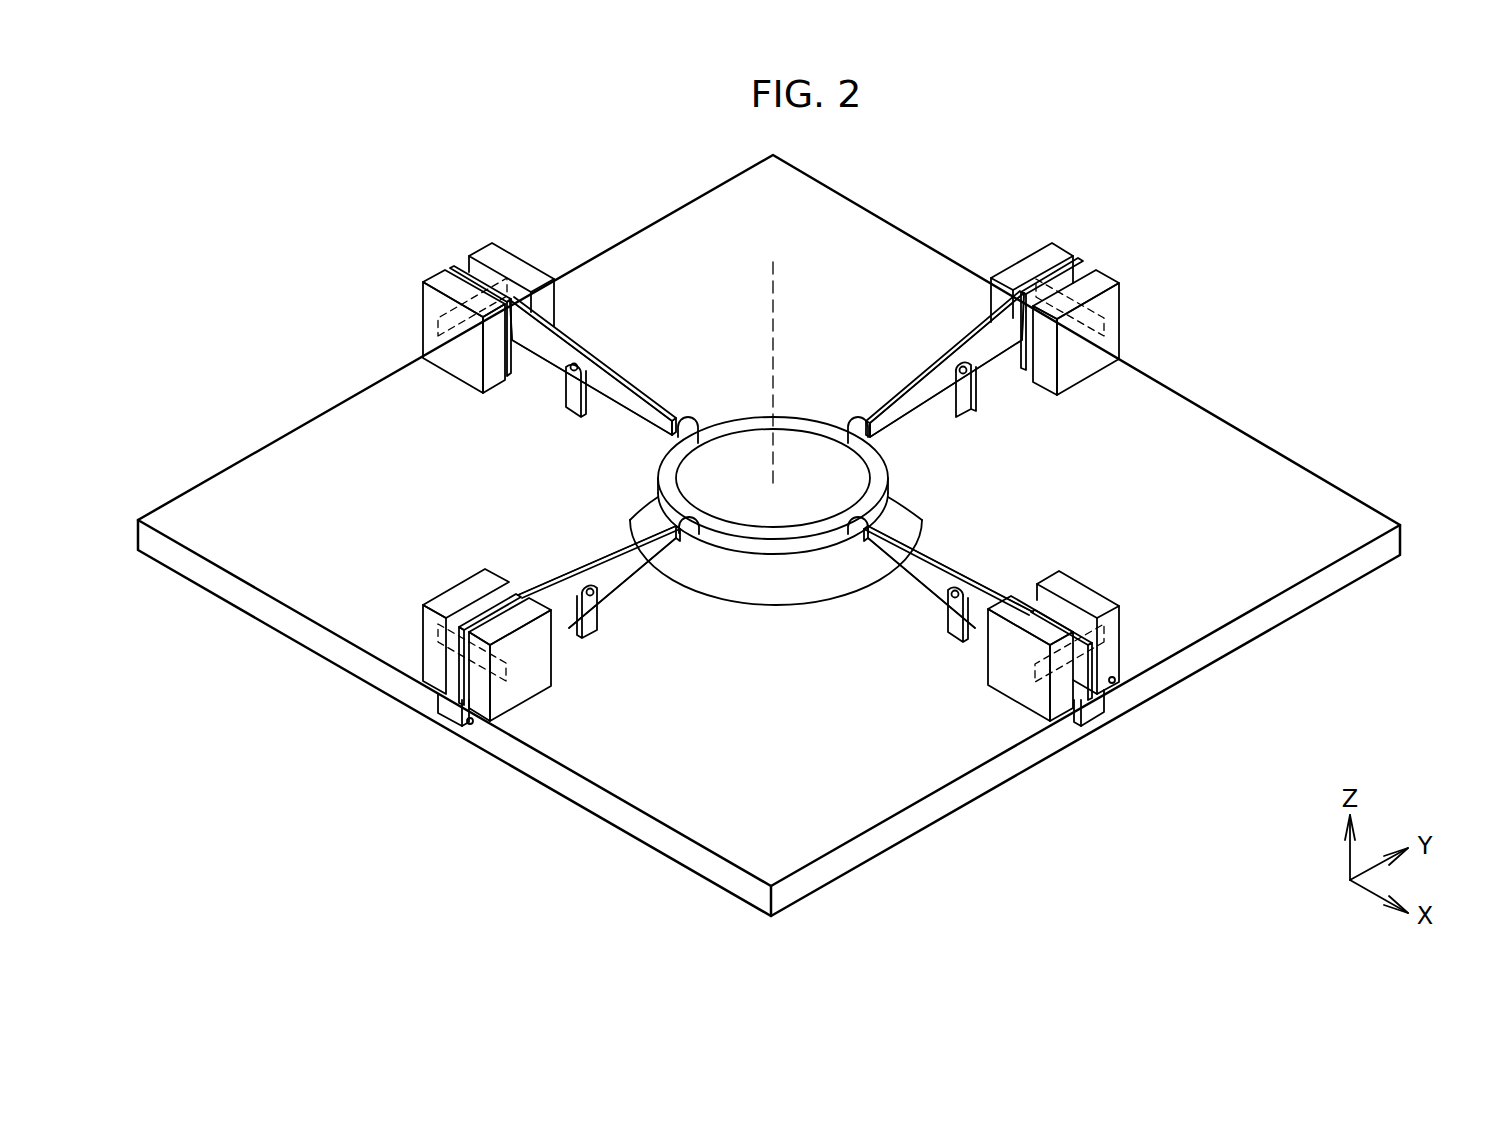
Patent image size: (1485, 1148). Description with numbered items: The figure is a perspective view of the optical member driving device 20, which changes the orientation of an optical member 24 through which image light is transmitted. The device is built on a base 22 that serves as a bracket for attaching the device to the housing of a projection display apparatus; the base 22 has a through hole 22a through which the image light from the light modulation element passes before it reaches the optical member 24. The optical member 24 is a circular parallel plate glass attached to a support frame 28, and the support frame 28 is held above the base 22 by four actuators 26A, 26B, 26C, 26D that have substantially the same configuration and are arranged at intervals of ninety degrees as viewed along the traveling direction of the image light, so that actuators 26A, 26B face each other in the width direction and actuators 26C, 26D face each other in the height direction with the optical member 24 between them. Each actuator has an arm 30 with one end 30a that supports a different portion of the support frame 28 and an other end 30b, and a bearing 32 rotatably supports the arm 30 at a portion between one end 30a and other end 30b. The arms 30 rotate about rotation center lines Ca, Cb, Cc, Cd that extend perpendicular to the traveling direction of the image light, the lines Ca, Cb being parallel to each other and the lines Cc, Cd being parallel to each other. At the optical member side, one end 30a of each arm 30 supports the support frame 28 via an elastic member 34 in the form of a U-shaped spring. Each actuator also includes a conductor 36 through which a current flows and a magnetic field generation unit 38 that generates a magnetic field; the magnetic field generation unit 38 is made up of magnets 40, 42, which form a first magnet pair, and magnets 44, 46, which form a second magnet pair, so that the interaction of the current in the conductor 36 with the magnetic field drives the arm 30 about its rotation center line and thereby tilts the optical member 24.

The optical member driving device 20 is at (362, 193).
The base 22 is at (342, 522).
The through hole 22a is at (655, 518).
The optical member 24 is at (752, 437).
The actuator 26A is at (613, 333).
The actuator 26B is at (976, 542).
The actuator 26C is at (489, 518).
The actuator 26D is at (875, 310).
The support frame 28 is at (810, 420).
The arm 30 is at (582, 352).
The one end 30a is at (662, 430).
The other end 30b is at (462, 268).
The bearing 32 is at (572, 418).
The elastic member 34 is at (692, 415).
The conductor 36 is at (470, 340).
The magnetic field generation unit 38 is at (808, 481).
The magnet 40 is at (489, 250).
The magnet 42 is at (440, 290).
The magnet 44 is at (445, 700).
The magnet 46 is at (470, 725).
The rotation center line Ca is at (560, 388).
The rotation center line Cb is at (1000, 570).
The rotation center line Cc is at (532, 580).
The rotation center line Cd is at (985, 395).